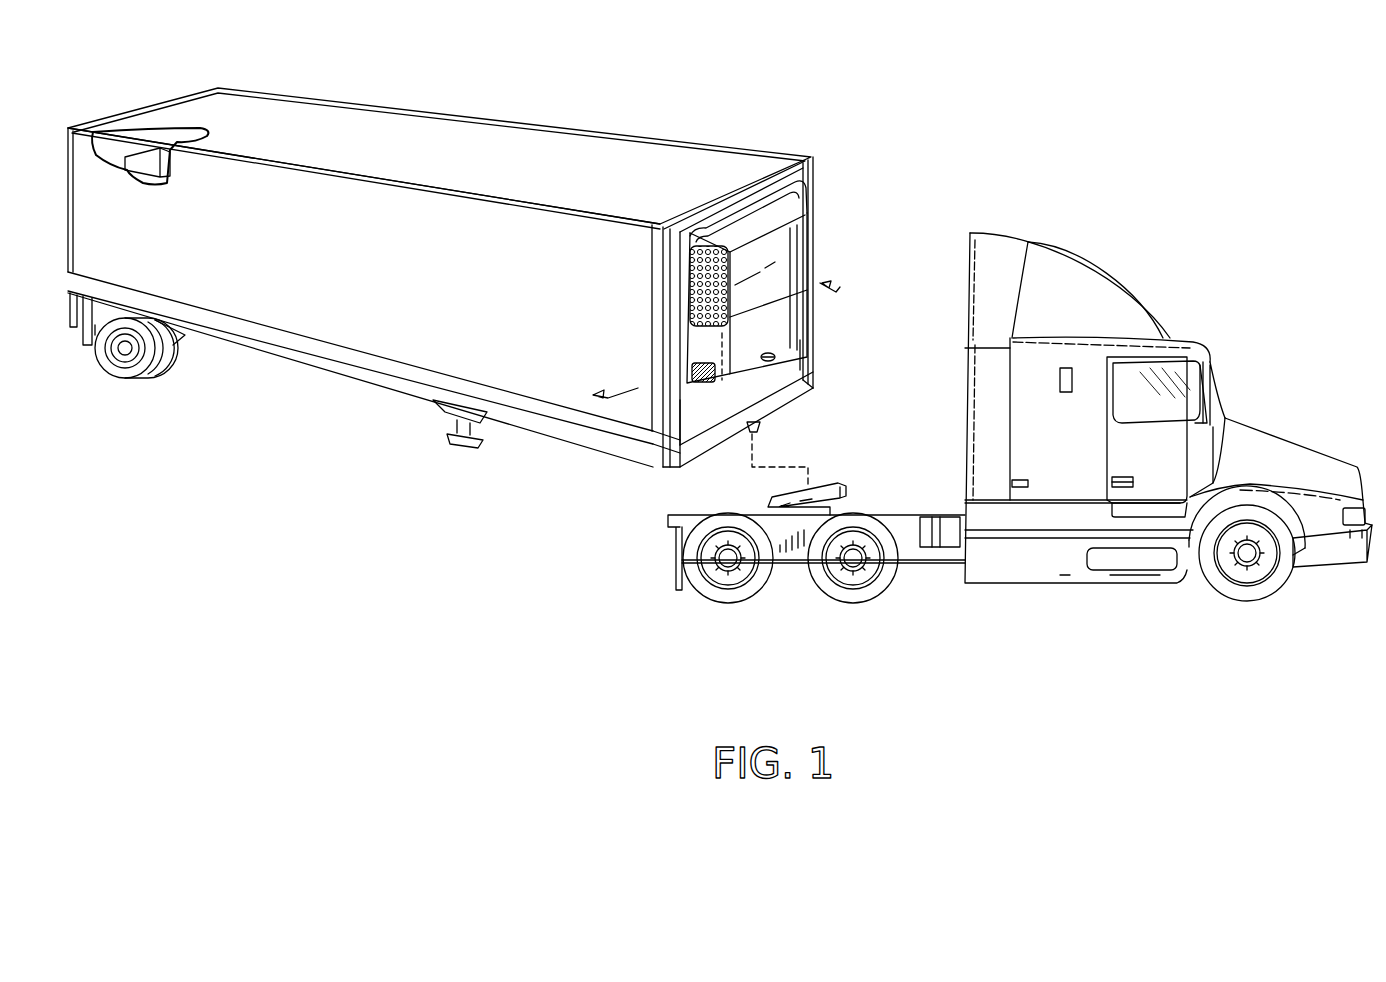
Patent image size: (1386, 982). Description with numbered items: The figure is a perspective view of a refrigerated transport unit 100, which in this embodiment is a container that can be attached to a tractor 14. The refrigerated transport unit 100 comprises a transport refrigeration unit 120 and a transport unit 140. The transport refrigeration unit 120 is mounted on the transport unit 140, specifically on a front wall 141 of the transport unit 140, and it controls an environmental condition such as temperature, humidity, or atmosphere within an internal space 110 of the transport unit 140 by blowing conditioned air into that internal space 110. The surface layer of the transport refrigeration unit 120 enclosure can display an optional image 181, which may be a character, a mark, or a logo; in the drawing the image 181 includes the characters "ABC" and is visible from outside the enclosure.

The refrigerated transport unit 100 is at (773, 92).
The internal space 110 is at (103, 142).
The transport refrigeration unit 120 is at (773, 263).
The transport unit 140 is at (523, 148).
The front wall 141 is at (697, 410).
The image 181 is at (780, 323).
The tractor 14 is at (1108, 293).